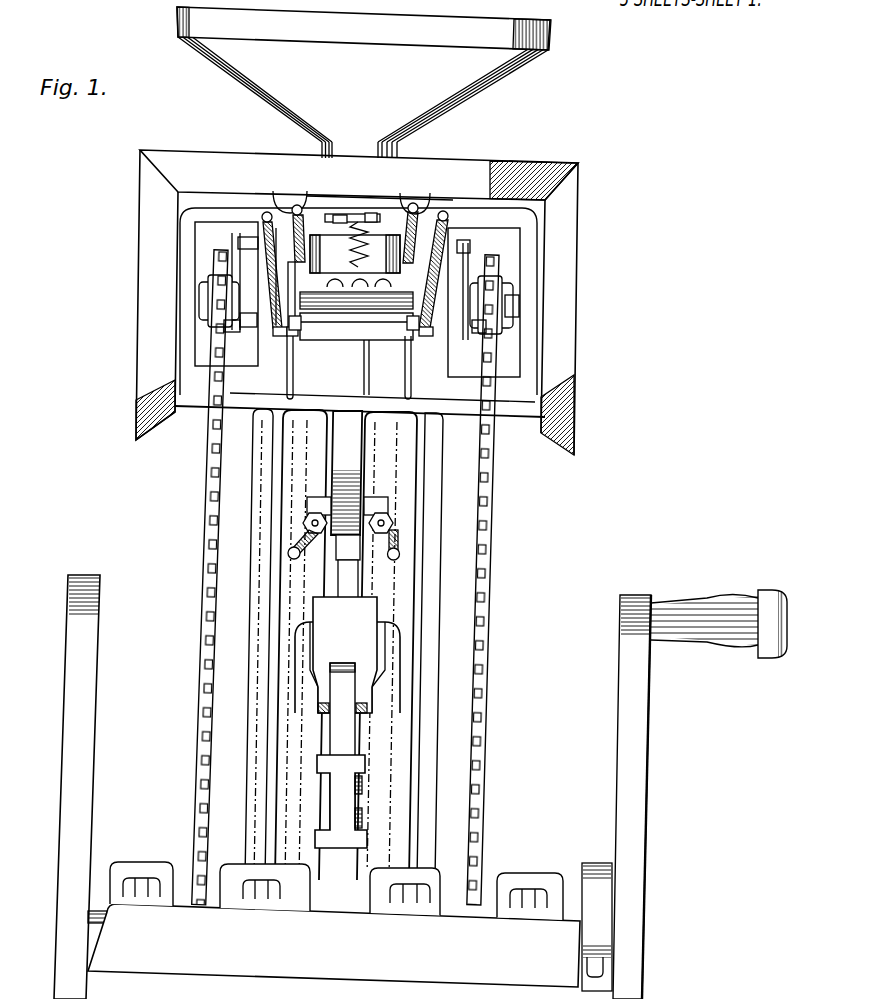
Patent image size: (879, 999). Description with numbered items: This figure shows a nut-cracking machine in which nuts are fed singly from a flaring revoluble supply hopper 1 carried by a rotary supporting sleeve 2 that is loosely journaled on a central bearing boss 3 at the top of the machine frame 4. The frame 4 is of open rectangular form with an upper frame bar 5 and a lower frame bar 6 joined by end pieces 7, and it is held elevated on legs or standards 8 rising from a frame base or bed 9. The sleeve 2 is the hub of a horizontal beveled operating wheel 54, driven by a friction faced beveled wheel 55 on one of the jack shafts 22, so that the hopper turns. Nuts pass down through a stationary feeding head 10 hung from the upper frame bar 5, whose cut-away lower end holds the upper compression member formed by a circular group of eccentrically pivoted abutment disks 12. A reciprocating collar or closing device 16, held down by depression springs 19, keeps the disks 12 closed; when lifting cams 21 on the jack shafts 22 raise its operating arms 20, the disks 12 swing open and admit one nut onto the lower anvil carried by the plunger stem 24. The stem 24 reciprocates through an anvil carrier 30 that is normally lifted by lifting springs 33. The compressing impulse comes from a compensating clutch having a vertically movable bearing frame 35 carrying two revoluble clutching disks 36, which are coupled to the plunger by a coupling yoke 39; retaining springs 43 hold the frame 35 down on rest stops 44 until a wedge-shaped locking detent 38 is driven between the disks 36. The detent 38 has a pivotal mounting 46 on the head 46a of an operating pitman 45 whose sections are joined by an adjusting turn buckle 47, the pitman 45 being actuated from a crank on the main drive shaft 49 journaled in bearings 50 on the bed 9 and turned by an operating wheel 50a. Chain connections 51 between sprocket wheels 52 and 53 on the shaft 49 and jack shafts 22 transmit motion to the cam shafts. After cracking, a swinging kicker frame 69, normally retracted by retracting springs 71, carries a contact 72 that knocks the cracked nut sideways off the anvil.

The supply hopper 1 is at (364, 82).
The rotary supporting sleeve 2 is at (519, 308).
The central bearing projection or boss 3 is at (389, 193).
The machine frame 4 is at (517, 270).
The upper frame bar 5 is at (460, 229).
The lower frame bar 6 is at (470, 411).
The end pieces 7 is at (182, 350).
The legs or standards 8 is at (252, 760).
The frame base or bed 9 is at (334, 945).
The stationary feeding head 10 is at (336, 213).
The abutment disks 12 is at (355, 254).
The closing device 16 is at (388, 250).
The depression springs 19 is at (268, 211).
The operating arms 20 is at (258, 243).
The lifting cams 21 is at (239, 330).
The jack shafts 22 is at (193, 290).
The plunger stem 24 is at (349, 367).
The anvil carrier 30 is at (359, 317).
The lifting springs 33 is at (462, 222).
The bearing frame 35 is at (307, 505).
The clutching disks 36 is at (330, 485).
The locking detent 38 is at (353, 573).
The coupling yoke 39 is at (343, 463).
The retaining springs 43 is at (293, 528).
The rest stops or abutments 44 is at (376, 528).
The operating pitman 45 is at (333, 734).
The pivotal mounting 46 is at (347, 597).
The head of the pitman 46a is at (327, 650).
The adjusting turn buckle 47 is at (333, 801).
The main drive shaft 49 is at (98, 892).
The bearings 50 is at (168, 863).
The operating wheel 50a is at (684, 794).
The chain connections 51 is at (205, 601).
The sprocket wheel 52 is at (200, 318).
The sprocket wheel 53 is at (486, 328).
The operating wheel 54 is at (541, 166).
The friction faced beveled wheel 55 is at (576, 407).
The kicker frame 69 is at (308, 343).
The retracting springs 71 is at (309, 266).
The contact 72 is at (382, 367).